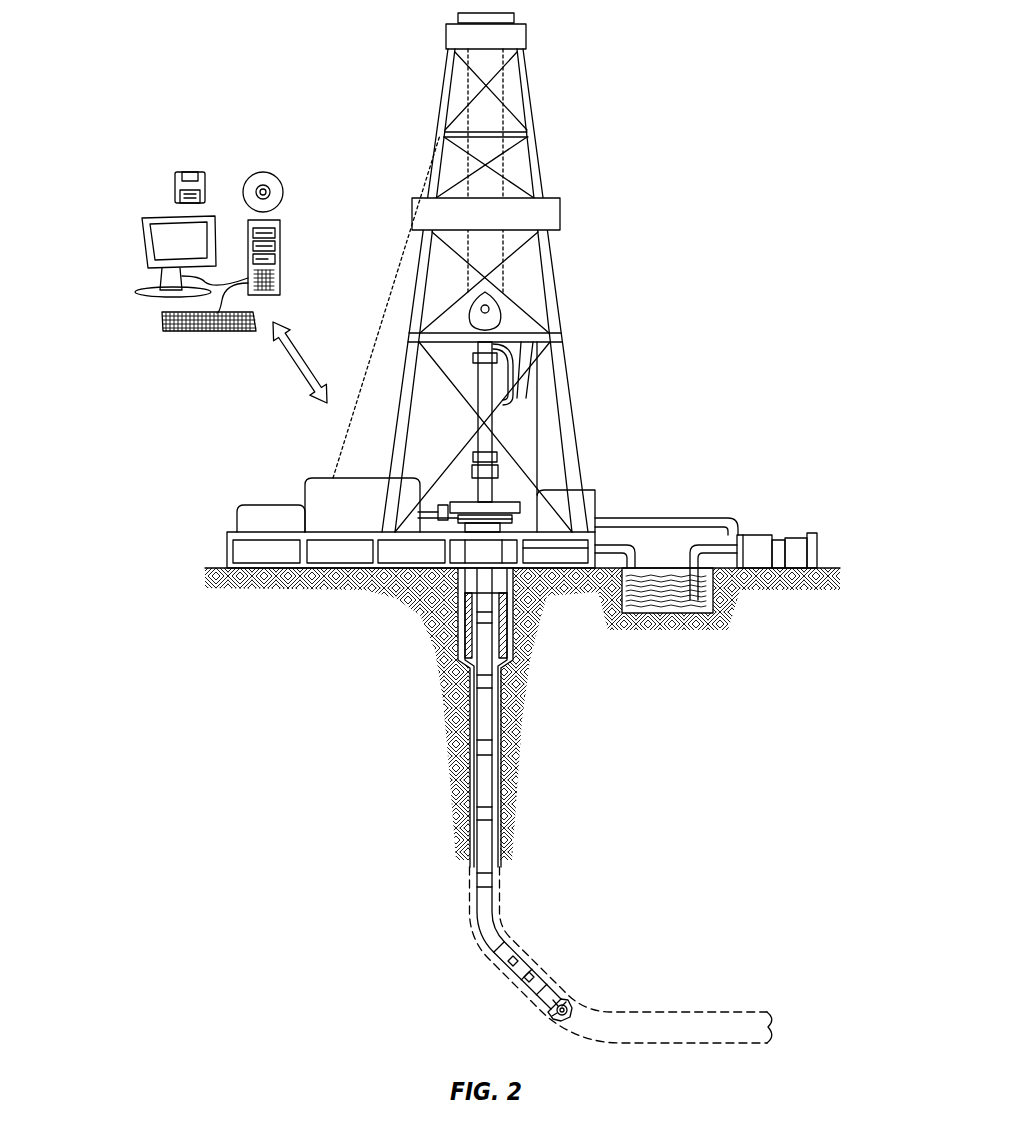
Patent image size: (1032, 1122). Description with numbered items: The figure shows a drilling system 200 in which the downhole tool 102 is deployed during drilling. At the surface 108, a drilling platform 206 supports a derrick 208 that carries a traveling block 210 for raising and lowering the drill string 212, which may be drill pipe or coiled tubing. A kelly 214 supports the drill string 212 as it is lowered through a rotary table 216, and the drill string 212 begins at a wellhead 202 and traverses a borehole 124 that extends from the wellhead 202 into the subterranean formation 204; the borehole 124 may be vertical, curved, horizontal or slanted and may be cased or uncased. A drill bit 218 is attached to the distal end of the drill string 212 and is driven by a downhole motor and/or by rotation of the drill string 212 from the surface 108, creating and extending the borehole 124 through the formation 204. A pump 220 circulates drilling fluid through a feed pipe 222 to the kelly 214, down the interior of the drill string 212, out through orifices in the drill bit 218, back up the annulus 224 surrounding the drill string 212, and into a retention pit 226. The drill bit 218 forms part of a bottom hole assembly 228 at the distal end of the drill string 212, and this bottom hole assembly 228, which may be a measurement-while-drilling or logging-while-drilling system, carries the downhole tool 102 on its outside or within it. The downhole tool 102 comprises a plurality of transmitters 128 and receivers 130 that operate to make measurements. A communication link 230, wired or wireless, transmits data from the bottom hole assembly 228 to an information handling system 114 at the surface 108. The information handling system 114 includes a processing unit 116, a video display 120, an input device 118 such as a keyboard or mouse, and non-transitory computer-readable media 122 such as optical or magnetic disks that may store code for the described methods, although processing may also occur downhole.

The drilling system 200 is at (765, 100).
The information handling system 114 is at (144, 158).
The non-transitory computer-readable media 122 is at (262, 172).
The video display 120 is at (147, 248).
The processing unit 116 is at (282, 230).
The input device 118 is at (173, 333).
The communication link 230 is at (290, 368).
The derrick 208 is at (537, 147).
The traveling block 210 is at (503, 310).
The kelly 214 is at (485, 382).
The rotary table 216 is at (517, 497).
The wellhead 202 is at (530, 519).
The feed pipe 222 is at (690, 519).
The pump 220 is at (760, 535).
The surface 108 is at (828, 568).
The drilling platform 206 is at (227, 558).
The retention pit 226 is at (665, 598).
The drill string 212 is at (493, 730).
The annulus 224 is at (467, 745).
The borehole 124 is at (500, 745).
The subterranean formation 204 is at (699, 826).
The transmitters 128 is at (482, 1005).
The receivers 130 is at (515, 1023).
The downhole tool 102 is at (520, 975).
The drill bit 218 is at (567, 995).
The bottom hole assembly 228 is at (487, 975).